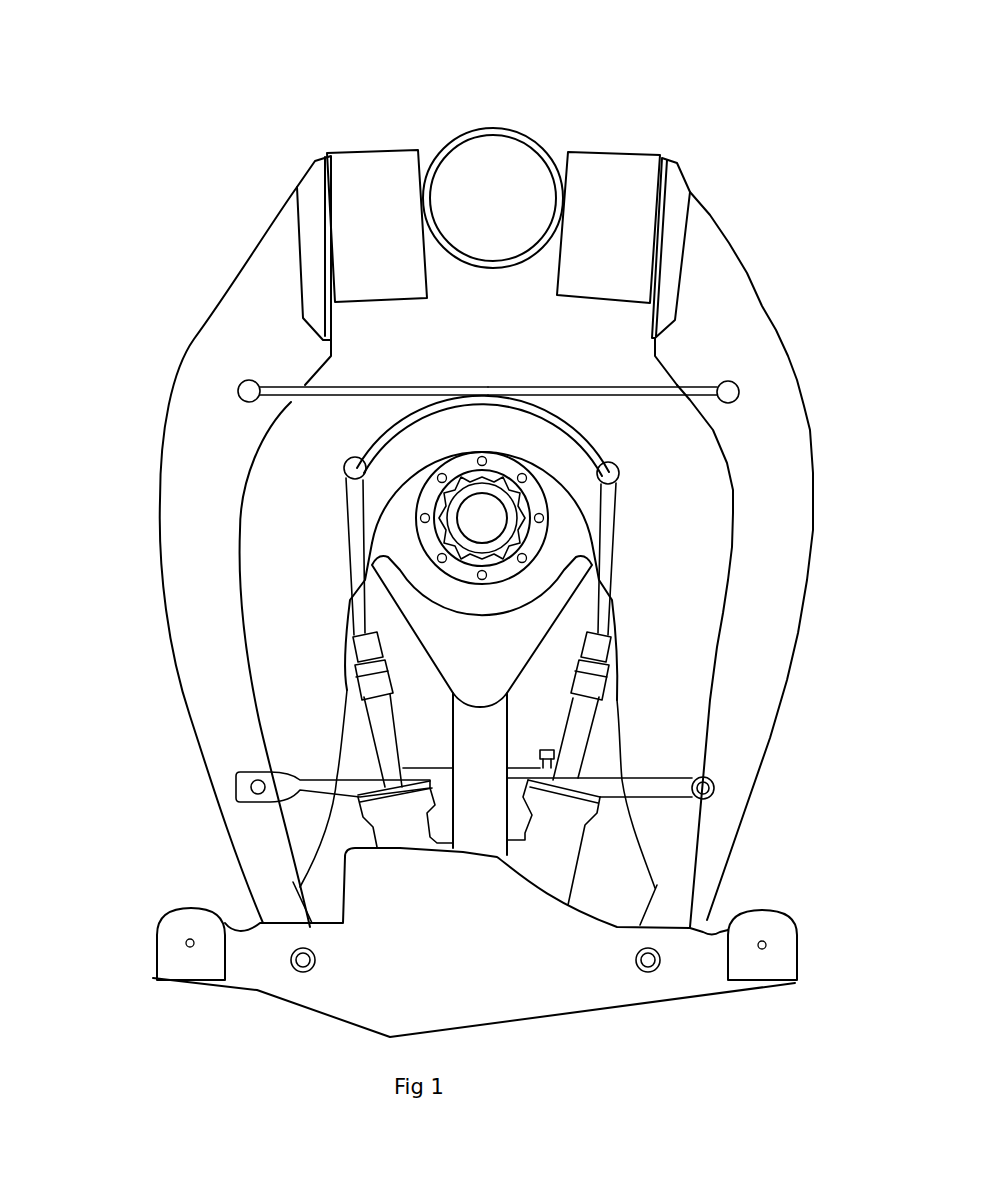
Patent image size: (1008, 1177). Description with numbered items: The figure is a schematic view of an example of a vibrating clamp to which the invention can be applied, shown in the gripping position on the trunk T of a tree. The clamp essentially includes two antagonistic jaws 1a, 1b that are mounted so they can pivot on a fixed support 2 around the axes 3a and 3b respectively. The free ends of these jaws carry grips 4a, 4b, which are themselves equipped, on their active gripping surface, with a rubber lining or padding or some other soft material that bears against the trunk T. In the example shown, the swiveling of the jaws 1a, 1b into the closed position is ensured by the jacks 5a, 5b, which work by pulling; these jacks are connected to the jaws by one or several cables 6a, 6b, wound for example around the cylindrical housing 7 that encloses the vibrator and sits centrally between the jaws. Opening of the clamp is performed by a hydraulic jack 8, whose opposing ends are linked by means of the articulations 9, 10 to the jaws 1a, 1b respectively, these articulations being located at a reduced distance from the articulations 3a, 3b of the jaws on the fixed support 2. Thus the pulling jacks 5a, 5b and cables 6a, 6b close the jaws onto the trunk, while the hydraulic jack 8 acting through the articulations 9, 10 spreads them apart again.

The trunk T is at (493, 170).
The antagonistic jaw 1a is at (769, 555).
The antagonistic jaw 1b is at (192, 668).
The fixed support 2 is at (473, 985).
The axis 3a is at (657, 968).
The axis 3b is at (293, 970).
The grip 4a is at (645, 173).
The grip 4b is at (338, 172).
The jack 5a is at (578, 711).
The jack 5b is at (373, 712).
The cable 6a is at (324, 406).
The cable 6b is at (637, 400).
The cylindrical housing 7 is at (378, 498).
The hydraulic jack 8 is at (292, 788).
The articulation 9 is at (713, 796).
The articulation 10 is at (252, 789).